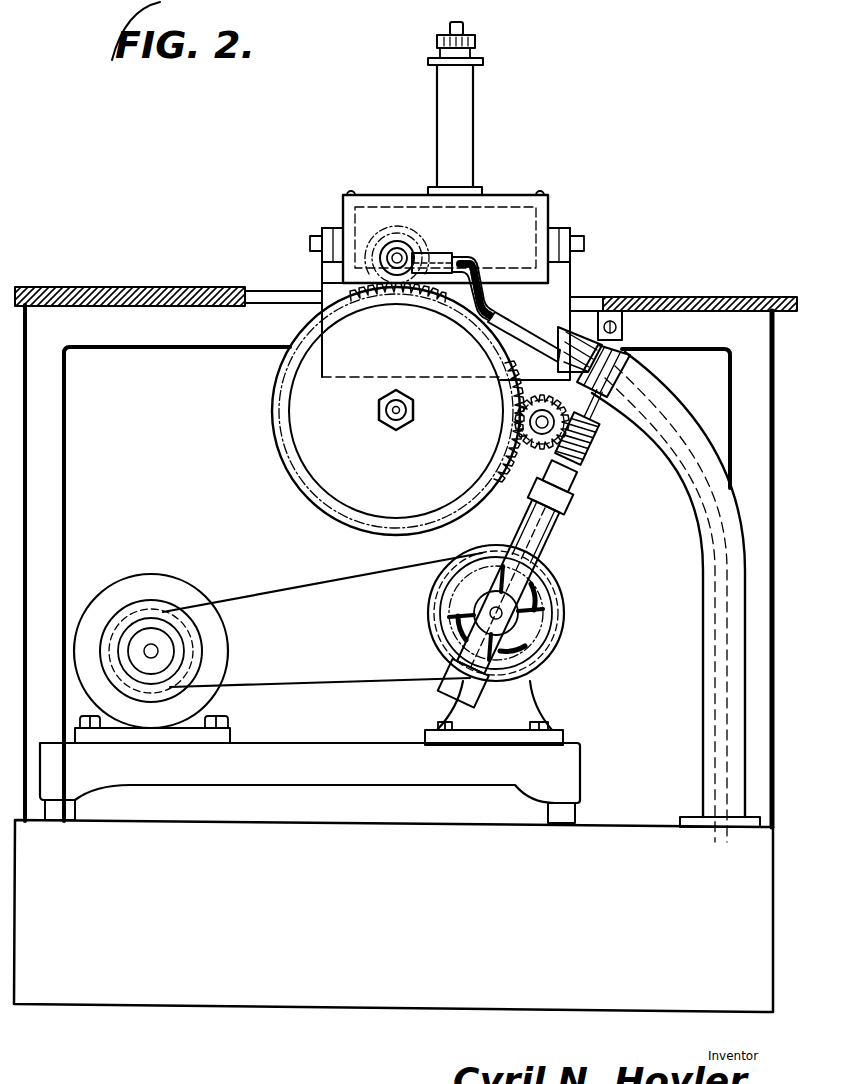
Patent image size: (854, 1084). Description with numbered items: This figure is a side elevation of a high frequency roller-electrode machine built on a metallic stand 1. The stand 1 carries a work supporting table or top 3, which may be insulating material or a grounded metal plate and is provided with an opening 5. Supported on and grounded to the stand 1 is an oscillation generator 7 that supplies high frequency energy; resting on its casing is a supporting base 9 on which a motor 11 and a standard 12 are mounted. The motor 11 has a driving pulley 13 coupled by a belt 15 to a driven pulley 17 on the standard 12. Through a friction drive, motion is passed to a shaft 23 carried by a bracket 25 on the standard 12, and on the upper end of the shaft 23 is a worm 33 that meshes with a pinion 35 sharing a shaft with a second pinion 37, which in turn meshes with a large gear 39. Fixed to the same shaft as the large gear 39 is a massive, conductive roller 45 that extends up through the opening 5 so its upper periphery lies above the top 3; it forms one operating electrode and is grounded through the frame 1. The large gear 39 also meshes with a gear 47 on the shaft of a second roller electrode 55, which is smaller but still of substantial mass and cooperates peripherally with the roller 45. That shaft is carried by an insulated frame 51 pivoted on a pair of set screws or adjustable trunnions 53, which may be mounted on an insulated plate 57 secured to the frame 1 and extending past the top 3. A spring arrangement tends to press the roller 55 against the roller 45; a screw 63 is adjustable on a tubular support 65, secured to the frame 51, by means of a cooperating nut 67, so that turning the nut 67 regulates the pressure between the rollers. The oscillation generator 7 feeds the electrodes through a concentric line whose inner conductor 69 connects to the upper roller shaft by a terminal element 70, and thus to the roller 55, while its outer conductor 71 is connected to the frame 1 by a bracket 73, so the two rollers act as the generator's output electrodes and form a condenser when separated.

The metallic stand 1 is at (66, 463).
The work supporting table 3 is at (168, 290).
The opening 5 is at (255, 293).
The oscillation generator 7 is at (202, 990).
The supporting base 9 is at (567, 770).
The motor 11 is at (125, 586).
The standard 12 is at (525, 697).
The driving pulley 13 is at (197, 652).
The belt 15 is at (333, 596).
The driven pulley 17 is at (445, 612).
The shaft 23 is at (537, 536).
The bracket 25 is at (518, 528).
The worm 33 is at (585, 452).
The pinion 35 is at (533, 463).
The second pinion 37 is at (510, 377).
The large gear 39 is at (297, 433).
The roller 45 is at (270, 386).
The gear 47 is at (362, 272).
The insulated frame 51 is at (508, 196).
The set screws or adjustable trunnions 53 is at (312, 247).
The second roller electrode 55 is at (394, 232).
The insulated plate 57 is at (567, 275).
The screw 63 is at (448, 27).
The tubular support 65 is at (470, 98).
The nut 67 is at (476, 48).
The inner conductor 69 is at (520, 328).
The terminal element 70 is at (449, 258).
The outer conductor 71 is at (663, 395).
The bracket 73 is at (618, 332).